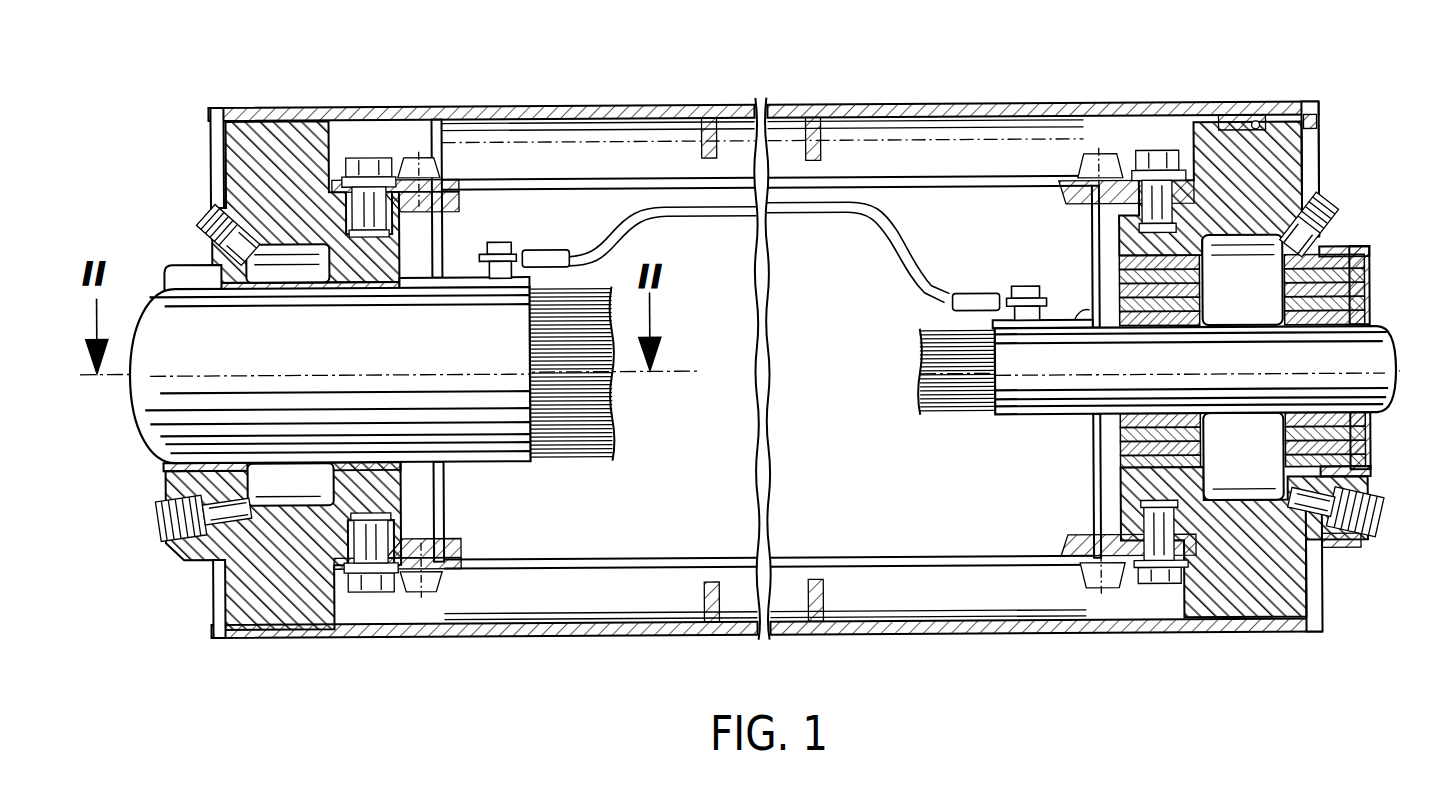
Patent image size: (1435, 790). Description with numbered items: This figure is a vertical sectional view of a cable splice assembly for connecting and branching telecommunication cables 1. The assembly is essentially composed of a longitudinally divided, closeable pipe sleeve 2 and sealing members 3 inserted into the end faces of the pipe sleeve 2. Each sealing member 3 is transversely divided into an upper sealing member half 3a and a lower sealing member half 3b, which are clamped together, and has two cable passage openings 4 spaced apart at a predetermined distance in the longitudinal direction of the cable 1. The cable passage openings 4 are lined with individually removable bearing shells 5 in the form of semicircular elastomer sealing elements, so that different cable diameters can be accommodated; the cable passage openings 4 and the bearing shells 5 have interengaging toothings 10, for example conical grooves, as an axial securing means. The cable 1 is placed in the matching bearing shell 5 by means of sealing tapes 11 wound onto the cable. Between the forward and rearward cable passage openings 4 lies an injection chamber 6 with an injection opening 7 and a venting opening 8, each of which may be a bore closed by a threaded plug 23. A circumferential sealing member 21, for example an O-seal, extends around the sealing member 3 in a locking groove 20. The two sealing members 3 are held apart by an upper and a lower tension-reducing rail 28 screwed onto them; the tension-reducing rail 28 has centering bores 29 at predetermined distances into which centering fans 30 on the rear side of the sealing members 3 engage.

The cable 1 is at (477, 433).
The pipe sleeve 2 is at (945, 106).
The sealing member 3 is at (203, 604).
The upper sealing member half 3a is at (1323, 130).
The lower sealing member half 3b is at (1322, 565).
The cable passage opening 4 is at (400, 520).
The bearing shell 5 is at (1352, 288).
The injection chamber 6 is at (297, 248).
The injection opening 7 is at (207, 545).
The venting opening 8 is at (237, 195).
The interengaging toothings 10 is at (1352, 466).
The sealing tape 11 is at (180, 258).
The locking groove 20 is at (1273, 172).
The circumferential sealing member 21 is at (1233, 116).
The threaded plug 23 is at (207, 228).
The tension-reducing rail 28 is at (607, 177).
The centering bore 29 is at (466, 178).
The centering fan 30 is at (435, 165).